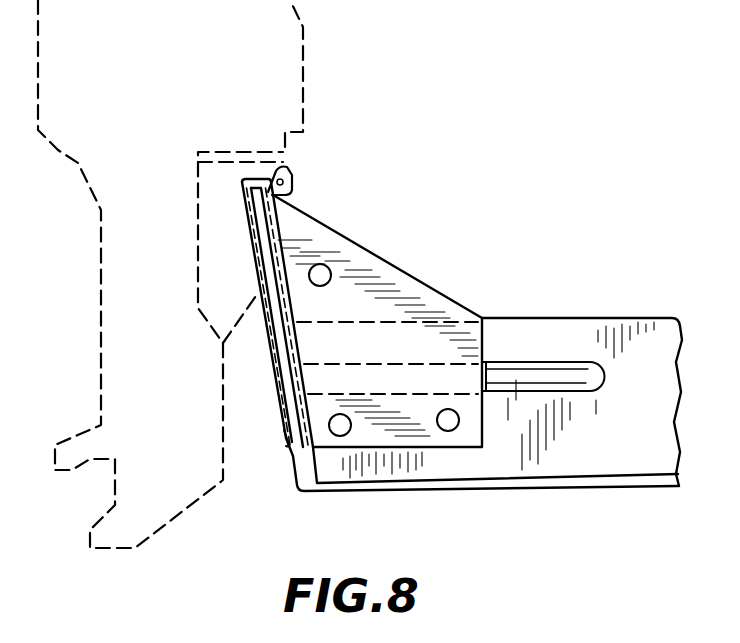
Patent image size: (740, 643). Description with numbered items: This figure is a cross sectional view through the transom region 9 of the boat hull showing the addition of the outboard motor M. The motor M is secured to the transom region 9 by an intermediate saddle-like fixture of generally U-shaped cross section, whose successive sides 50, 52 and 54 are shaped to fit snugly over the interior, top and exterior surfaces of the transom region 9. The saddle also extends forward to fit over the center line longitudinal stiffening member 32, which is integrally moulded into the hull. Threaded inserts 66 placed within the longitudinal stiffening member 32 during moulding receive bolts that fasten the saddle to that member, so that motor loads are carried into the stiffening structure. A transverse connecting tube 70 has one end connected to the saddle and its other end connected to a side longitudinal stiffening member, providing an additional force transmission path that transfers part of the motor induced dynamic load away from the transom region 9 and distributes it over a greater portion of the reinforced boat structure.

The outboard motor M is at (172, 81).
The side of saddle 50 is at (383, 280).
The side of saddle 52 is at (286, 167).
The side of saddle 54 is at (289, 276).
The threaded inserts 66 is at (327, 284).
The longitudinal stiffening member 32 is at (632, 328).
The transverse connecting tube 70 is at (566, 380).
The transom region 9 is at (287, 442).